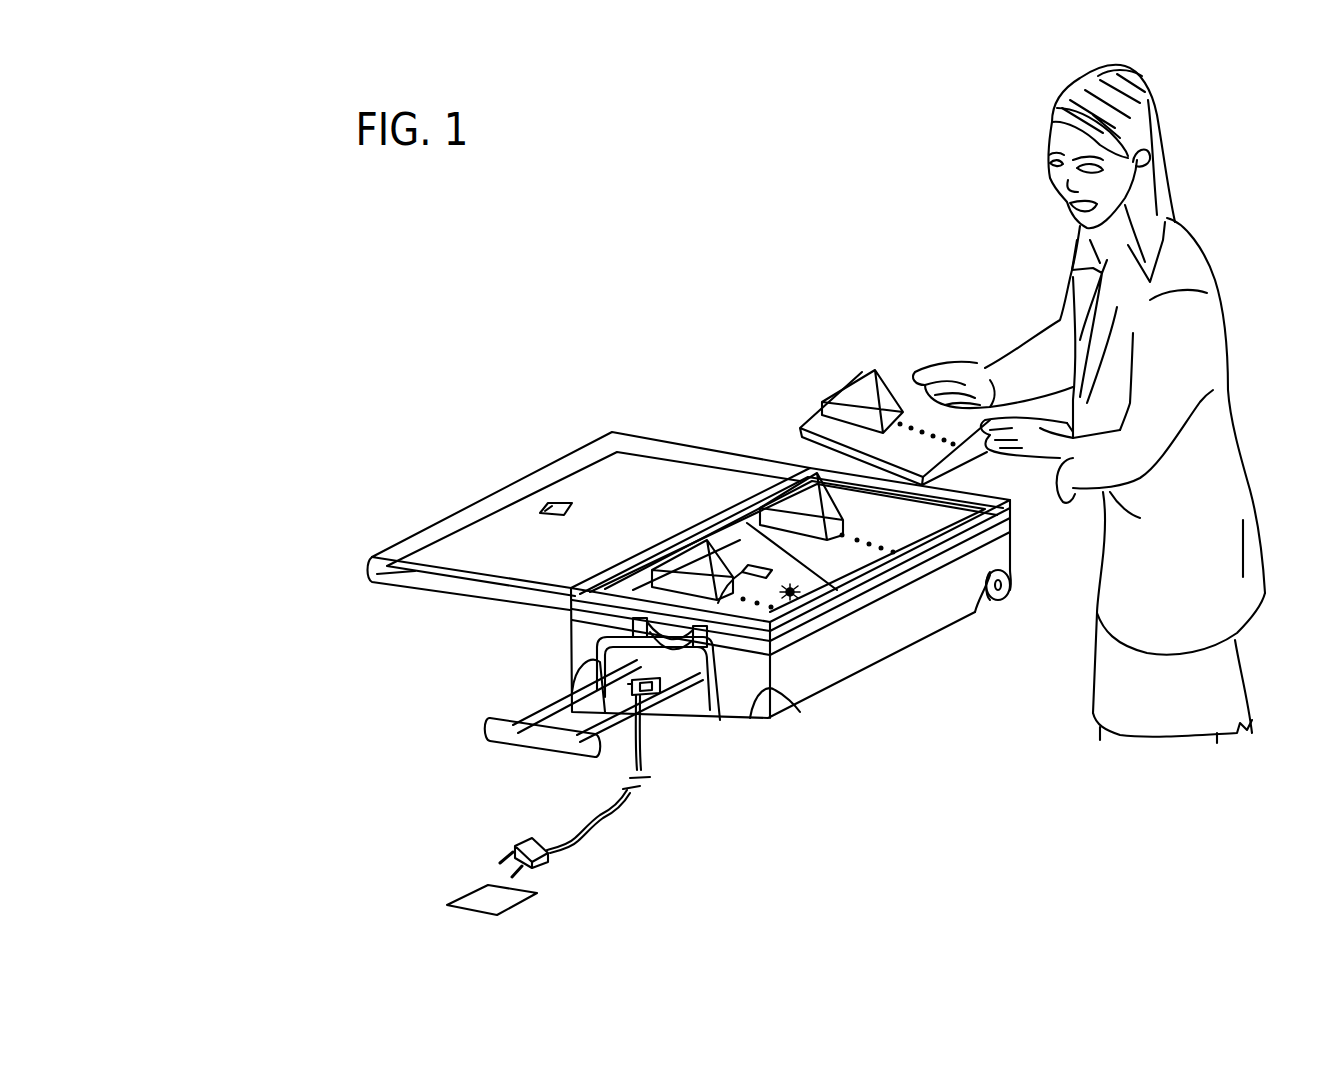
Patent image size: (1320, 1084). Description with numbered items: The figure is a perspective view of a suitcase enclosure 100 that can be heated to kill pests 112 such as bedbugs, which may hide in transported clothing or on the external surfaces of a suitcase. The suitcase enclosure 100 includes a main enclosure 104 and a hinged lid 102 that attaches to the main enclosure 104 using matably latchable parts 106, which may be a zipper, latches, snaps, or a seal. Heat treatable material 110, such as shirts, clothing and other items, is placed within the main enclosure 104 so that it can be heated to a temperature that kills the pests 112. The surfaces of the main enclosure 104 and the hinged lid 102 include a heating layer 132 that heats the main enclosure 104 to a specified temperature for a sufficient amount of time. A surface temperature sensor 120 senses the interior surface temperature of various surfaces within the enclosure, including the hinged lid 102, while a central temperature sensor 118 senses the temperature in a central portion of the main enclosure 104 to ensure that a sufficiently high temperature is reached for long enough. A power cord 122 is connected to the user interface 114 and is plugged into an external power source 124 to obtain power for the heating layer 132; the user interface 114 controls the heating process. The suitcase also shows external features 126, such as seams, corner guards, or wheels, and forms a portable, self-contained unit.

The suitcase enclosure 100 is at (691, 554).
The hinged lid 102 is at (375, 576).
The main enclosure 104 is at (570, 633).
The matably latchable parts 106 is at (455, 513).
The heat treatable material 110 is at (903, 388).
The pests 112 is at (803, 590).
The user interface 114 is at (682, 697).
The central temperature sensor 118 is at (746, 566).
The surface temperature sensor 120 is at (540, 505).
The power cord 122 is at (508, 786).
The external power source 124 is at (437, 895).
The external features 126 is at (790, 703).
The heating layer 132 is at (737, 490).